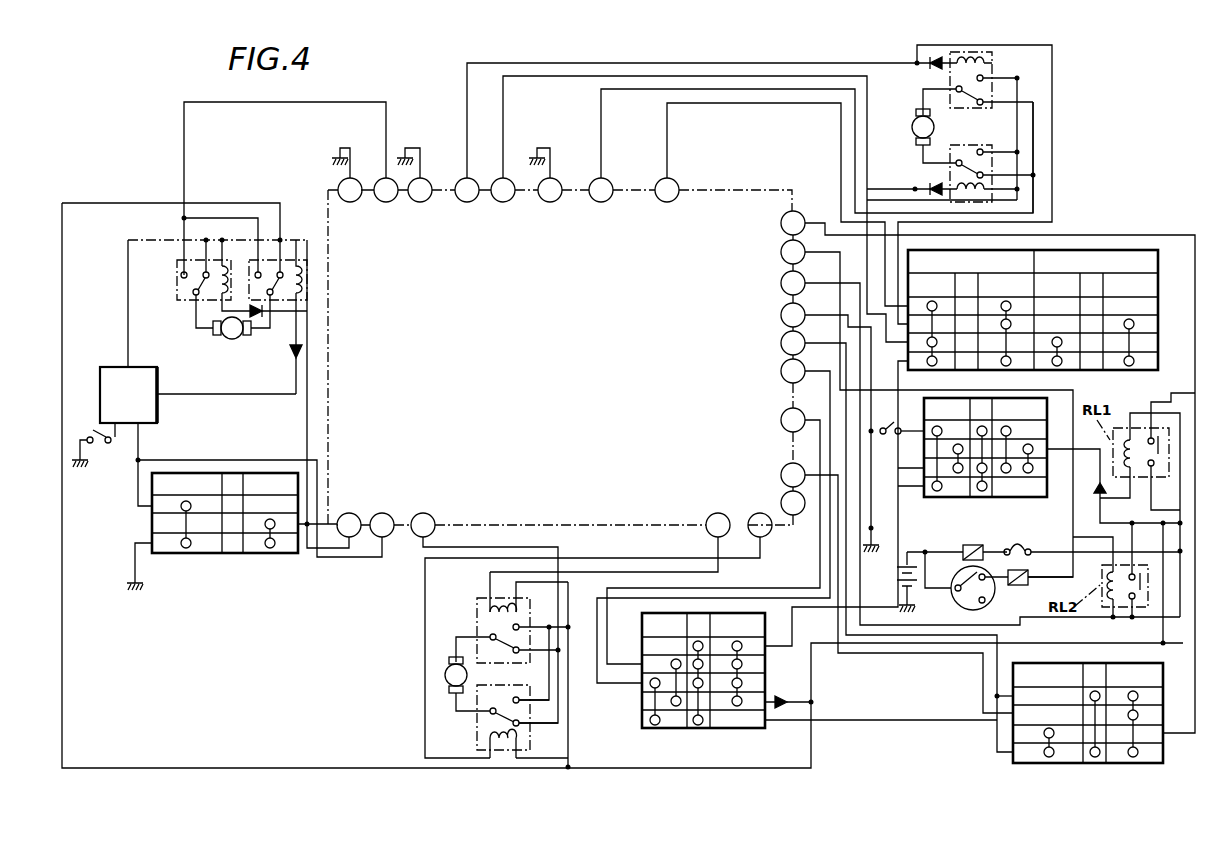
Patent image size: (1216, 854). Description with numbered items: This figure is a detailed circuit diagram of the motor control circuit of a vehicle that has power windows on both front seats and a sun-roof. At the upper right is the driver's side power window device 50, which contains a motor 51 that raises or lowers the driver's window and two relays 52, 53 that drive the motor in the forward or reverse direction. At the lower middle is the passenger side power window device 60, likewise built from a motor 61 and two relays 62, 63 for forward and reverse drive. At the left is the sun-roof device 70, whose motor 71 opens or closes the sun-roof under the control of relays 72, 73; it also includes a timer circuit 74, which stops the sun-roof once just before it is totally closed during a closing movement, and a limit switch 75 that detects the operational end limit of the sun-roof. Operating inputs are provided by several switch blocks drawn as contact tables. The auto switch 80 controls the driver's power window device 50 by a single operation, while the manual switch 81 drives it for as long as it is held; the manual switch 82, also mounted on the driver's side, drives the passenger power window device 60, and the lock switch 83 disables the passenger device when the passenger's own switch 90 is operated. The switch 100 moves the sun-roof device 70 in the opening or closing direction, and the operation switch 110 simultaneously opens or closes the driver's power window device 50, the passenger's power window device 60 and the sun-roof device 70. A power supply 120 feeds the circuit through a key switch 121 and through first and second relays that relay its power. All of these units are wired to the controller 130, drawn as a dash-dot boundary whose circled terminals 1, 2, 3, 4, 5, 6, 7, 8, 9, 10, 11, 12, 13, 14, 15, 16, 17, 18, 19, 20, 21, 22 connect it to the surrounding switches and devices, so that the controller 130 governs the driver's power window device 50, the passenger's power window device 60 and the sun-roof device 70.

The power window device 50 is at (997, 134).
The motor 51 is at (912, 120).
The relay 52 is at (948, 178).
The relay 53 is at (994, 60).
The power window device 60 is at (424, 671).
The motor 61 is at (450, 689).
The relay 62 is at (475, 726).
The relay 63 is at (475, 630).
The sun-roof device 70 is at (182, 312).
The motor 71 is at (230, 340).
The relay 72 is at (300, 258).
The relay 73 is at (176, 288).
The timer circuit 74 is at (162, 411).
The limit switch 75 is at (100, 448).
The auto switch 80 is at (1017, 250).
The manual switch 81 is at (1143, 258).
The manual switch 82 is at (922, 452).
The lock switch 83 is at (889, 425).
The switch 90 is at (699, 728).
The switch 100 is at (233, 553).
The operation switch 110 is at (1013, 757).
The power supply 120 is at (902, 564).
The key switch 121 is at (962, 605).
The controller 130 is at (781, 169).
The connector terminal 1 is at (988, 472).
The connector terminal 2 is at (947, 408).
The connector terminal 3 is at (980, 448).
The connector terminal 4 is at (830, 427).
The connector terminal 5 is at (897, 541).
The connector terminal 6 is at (713, 521).
The connector terminal 7 is at (713, 536).
The connector terminal 8 is at (897, 588).
The connector terminal 9 is at (793, 503).
The connector terminal 10 is at (598, 635).
The connector terminal 11 is at (610, 542).
The connector terminal 12 is at (484, 618).
The connector terminal 13 is at (382, 525).
The connector terminal 14 is at (349, 525).
The connector terminal 15 is at (347, 175).
The connector terminal 16 is at (386, 190).
The connector terminal 17 is at (414, 175).
The connector terminal 18 is at (686, 132).
The connector terminal 19 is at (754, 209).
The connector terminal 20 is at (545, 175).
The connector terminal 21 is at (811, 151).
The connector terminal 22 is at (781, 204).